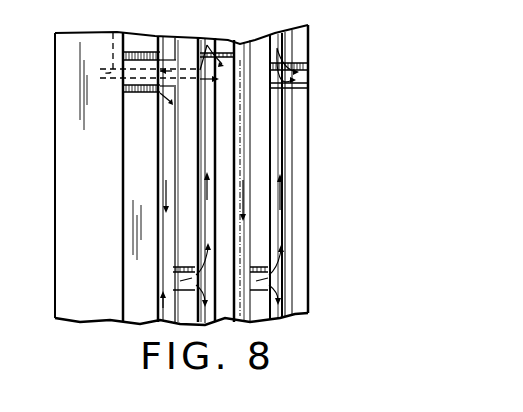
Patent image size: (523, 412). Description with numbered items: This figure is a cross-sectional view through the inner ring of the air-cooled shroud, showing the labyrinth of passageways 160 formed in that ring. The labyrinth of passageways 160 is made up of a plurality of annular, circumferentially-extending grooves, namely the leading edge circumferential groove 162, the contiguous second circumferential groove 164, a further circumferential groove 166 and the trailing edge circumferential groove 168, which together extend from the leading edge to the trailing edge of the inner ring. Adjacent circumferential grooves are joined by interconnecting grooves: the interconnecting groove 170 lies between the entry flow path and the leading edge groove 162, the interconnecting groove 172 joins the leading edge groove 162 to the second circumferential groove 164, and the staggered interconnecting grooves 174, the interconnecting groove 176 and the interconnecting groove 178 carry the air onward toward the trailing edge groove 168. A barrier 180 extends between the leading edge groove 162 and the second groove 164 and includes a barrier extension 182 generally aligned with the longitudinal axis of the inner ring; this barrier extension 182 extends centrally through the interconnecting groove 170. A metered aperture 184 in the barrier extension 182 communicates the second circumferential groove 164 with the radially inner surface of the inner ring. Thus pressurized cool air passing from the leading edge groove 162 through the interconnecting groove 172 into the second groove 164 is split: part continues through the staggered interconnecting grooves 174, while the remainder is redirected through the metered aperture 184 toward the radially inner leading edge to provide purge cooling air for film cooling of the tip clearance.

The labyrinth of passageways 160 is at (241, 32).
The leading edge circumferential groove 162 is at (163, 151).
The second circumferential groove 164 is at (203, 153).
The circumferential groove 166 is at (242, 134).
The trailing edge circumferential groove 168 is at (280, 158).
The interconnecting groove 170 is at (122, 98).
The interconnecting groove 172 is at (180, 281).
The staggered interconnecting grooves 174 is at (229, 50).
The interconnecting groove 176 is at (252, 262).
The interconnecting groove 178 is at (300, 68).
The barrier 180 is at (183, 132).
The barrier extension 182 is at (122, 79).
The metered aperture 184 is at (144, 42).